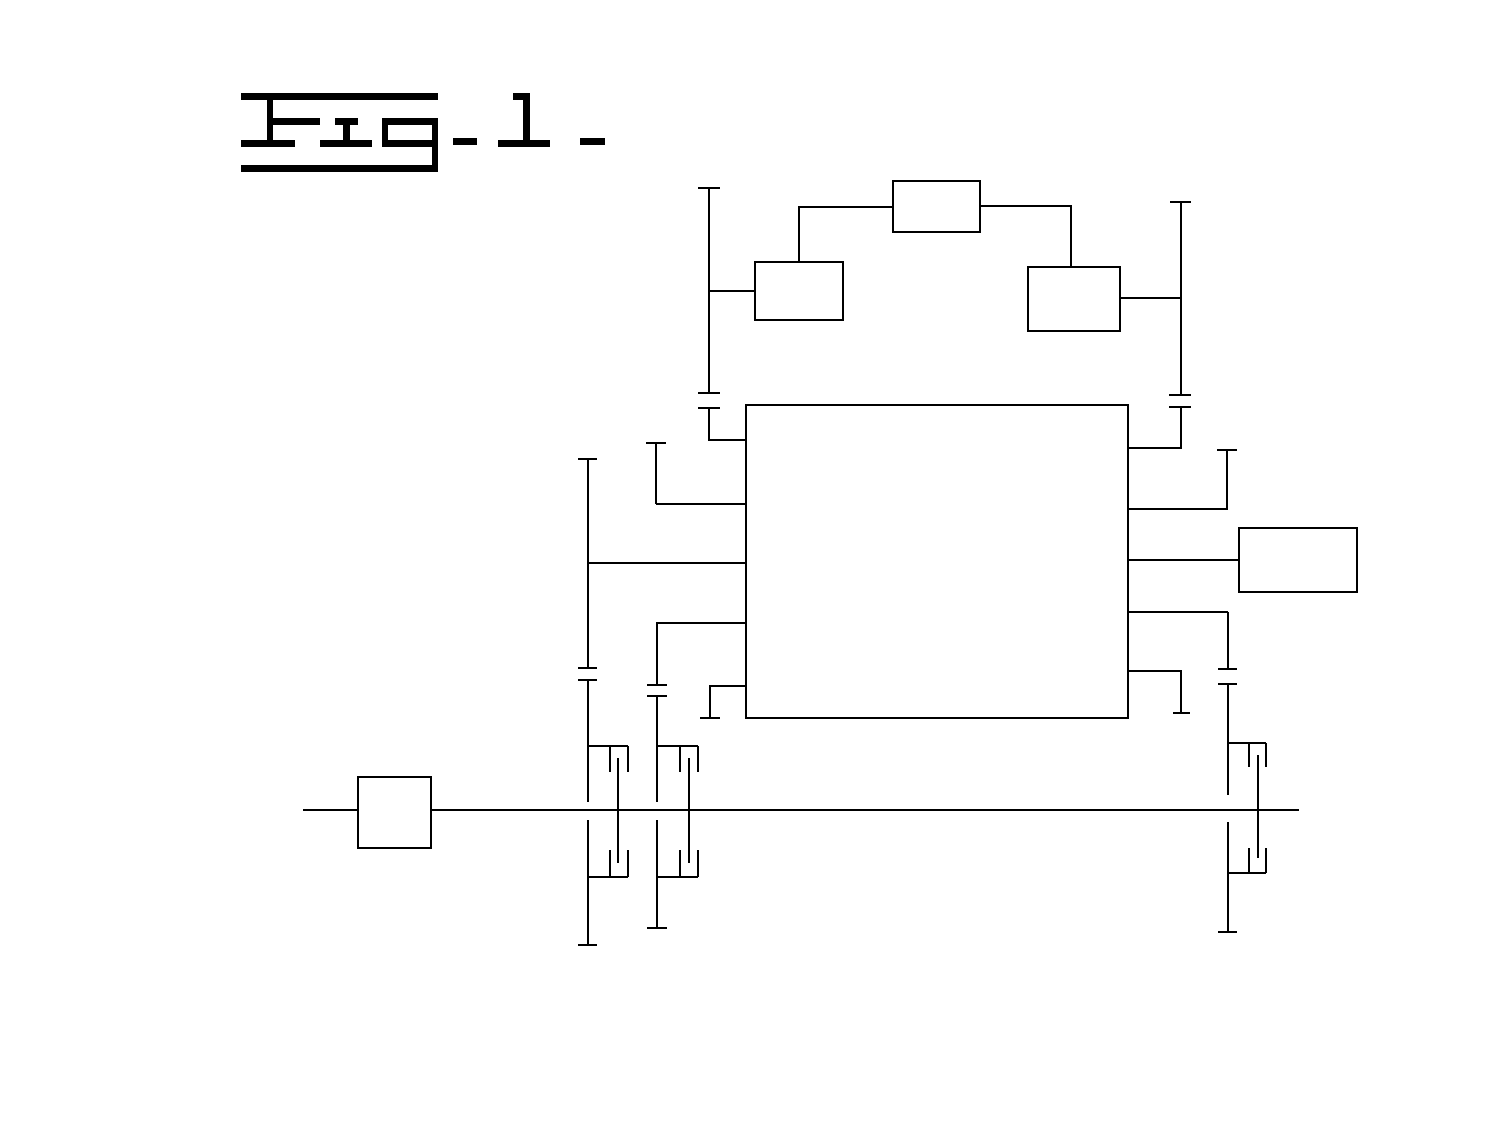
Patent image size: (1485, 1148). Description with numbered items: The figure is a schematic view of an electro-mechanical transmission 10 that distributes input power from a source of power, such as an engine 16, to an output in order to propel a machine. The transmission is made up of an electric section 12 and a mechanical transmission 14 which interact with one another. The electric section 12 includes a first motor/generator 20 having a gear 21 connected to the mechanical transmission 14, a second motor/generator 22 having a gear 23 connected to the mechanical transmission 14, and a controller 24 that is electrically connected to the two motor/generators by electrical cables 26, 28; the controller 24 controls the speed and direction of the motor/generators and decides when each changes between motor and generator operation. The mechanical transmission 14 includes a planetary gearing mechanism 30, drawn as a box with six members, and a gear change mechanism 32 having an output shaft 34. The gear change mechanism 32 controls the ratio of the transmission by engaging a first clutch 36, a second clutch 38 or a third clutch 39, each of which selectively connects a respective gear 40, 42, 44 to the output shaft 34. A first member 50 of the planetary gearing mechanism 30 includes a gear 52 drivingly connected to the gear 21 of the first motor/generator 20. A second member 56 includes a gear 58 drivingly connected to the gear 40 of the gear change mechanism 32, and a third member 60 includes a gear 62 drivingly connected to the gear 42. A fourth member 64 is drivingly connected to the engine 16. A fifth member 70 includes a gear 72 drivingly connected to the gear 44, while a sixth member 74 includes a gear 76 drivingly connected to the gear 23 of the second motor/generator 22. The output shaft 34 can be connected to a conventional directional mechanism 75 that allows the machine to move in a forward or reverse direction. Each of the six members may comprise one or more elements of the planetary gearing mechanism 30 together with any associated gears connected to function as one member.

The electro-mechanical transmission 10 is at (1127, 190).
The electric section 12 is at (823, 148).
The mechanical transmission 14 is at (1245, 508).
The engine 16 is at (1357, 548).
The first motor/generator 20 is at (1028, 312).
The gear 21 is at (1181, 273).
The second motor/generator 22 is at (843, 272).
The gear 23 is at (709, 236).
The controller 24 is at (948, 181).
The electrical cable 26 is at (1047, 267).
The electrical cable 28 is at (838, 207).
The planetary gearing mechanism 30 is at (933, 720).
The gear change mechanism 32 is at (1255, 733).
The output shaft 34 is at (973, 810).
The first clutch 36 is at (1262, 873).
The second clutch 38 is at (690, 877).
The third clutch 39 is at (615, 877).
The gear 40 is at (1228, 726).
The gear 42 is at (657, 913).
The gear 44 is at (588, 910).
The first member 50 is at (1155, 448).
The gear 52 is at (1179, 428).
The second member 56 is at (1165, 610).
The gear 58 is at (1228, 625).
The third member 60 is at (700, 504).
The gear 62 is at (656, 496).
The fourth member 64 is at (1190, 560).
The fifth member 70 is at (655, 563).
The gear 72 is at (588, 632).
The sixth member 74 is at (733, 440).
The directional mechanism 75 is at (358, 797).
The gear 76 is at (707, 423).